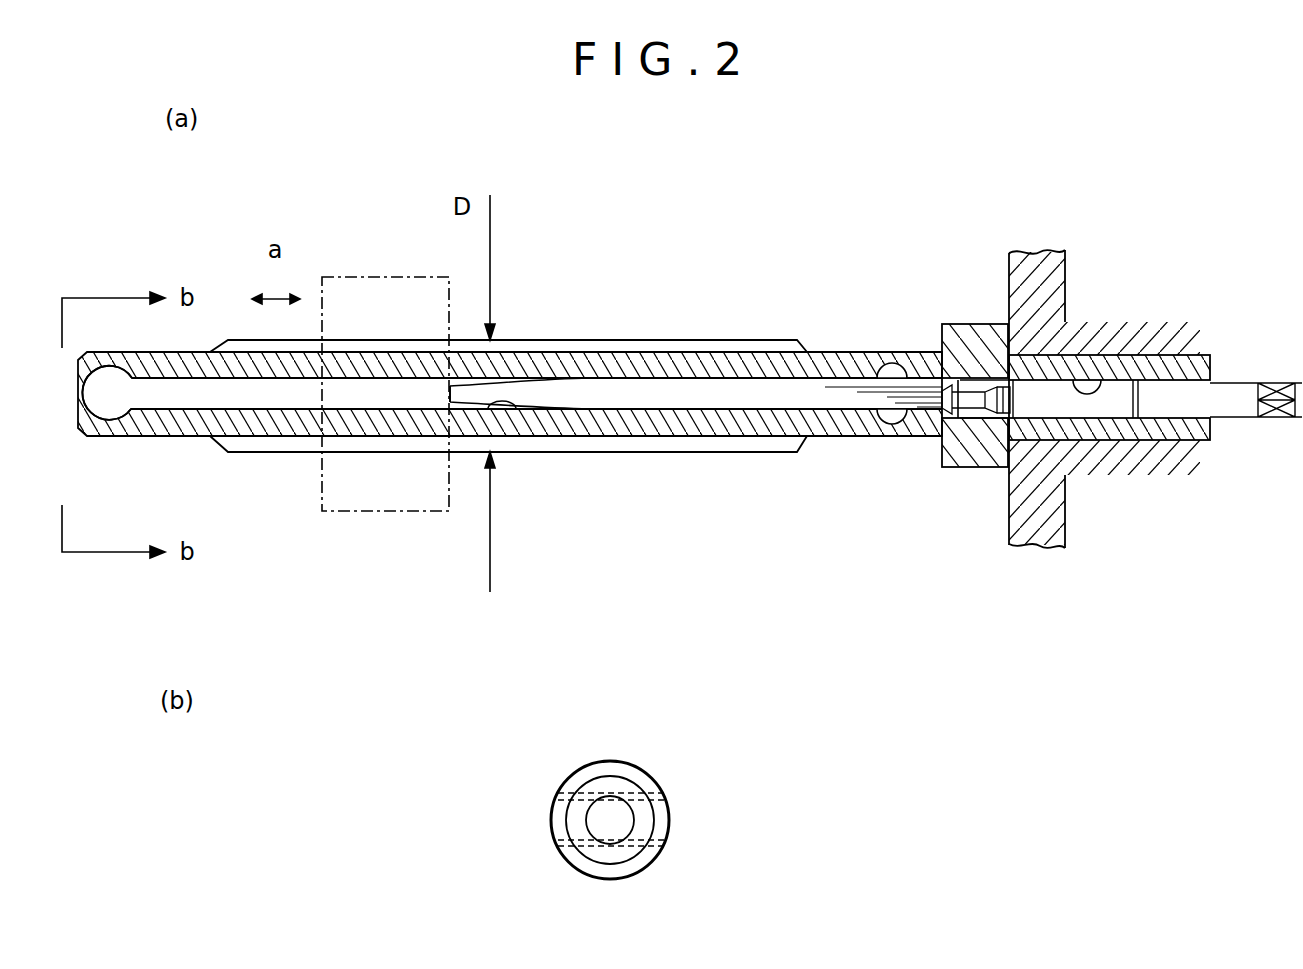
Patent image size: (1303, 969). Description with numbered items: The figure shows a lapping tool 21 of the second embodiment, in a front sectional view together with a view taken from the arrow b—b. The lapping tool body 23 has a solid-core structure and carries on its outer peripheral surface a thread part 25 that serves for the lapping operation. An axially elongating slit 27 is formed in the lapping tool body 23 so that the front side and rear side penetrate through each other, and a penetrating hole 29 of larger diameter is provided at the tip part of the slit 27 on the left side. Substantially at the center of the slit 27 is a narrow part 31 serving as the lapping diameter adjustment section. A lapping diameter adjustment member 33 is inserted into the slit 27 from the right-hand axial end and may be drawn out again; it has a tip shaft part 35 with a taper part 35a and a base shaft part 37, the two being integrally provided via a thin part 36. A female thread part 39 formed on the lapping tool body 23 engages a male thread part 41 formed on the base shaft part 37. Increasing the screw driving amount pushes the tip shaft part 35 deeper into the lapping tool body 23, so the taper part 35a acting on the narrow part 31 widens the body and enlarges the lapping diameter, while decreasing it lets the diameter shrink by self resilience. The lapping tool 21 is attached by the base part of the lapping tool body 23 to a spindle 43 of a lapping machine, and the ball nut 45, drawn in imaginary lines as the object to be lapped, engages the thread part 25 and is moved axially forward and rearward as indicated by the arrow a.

The lapping tool 21 is at (587, 327).
The lapping tool body 23 is at (855, 352).
The thread part 25 is at (402, 340).
The slit 27 is at (300, 400).
The penetrating hole 29 is at (123, 417).
The narrow part 31 is at (478, 407).
The lapping diameter adjustment member 33 is at (762, 402).
The tip shaft part 35 is at (598, 400).
The taper part 35a is at (452, 404).
The thin part 36 is at (963, 398).
The base shaft part 37 is at (1122, 408).
The female thread part 39 is at (1107, 376).
The male thread part 41 is at (1078, 422).
The spindle 43 is at (1040, 253).
The ball nut 45 is at (330, 276).